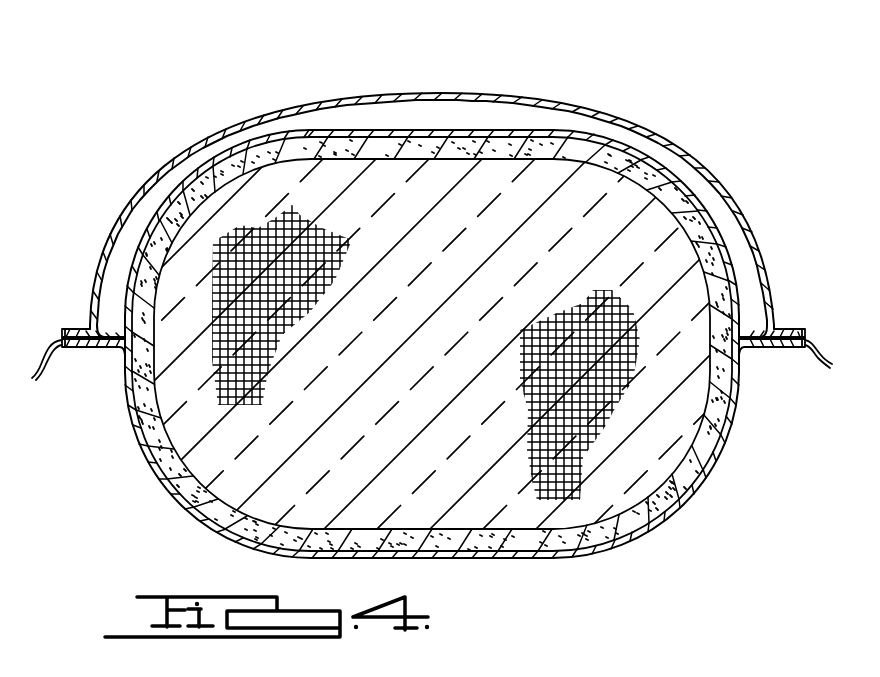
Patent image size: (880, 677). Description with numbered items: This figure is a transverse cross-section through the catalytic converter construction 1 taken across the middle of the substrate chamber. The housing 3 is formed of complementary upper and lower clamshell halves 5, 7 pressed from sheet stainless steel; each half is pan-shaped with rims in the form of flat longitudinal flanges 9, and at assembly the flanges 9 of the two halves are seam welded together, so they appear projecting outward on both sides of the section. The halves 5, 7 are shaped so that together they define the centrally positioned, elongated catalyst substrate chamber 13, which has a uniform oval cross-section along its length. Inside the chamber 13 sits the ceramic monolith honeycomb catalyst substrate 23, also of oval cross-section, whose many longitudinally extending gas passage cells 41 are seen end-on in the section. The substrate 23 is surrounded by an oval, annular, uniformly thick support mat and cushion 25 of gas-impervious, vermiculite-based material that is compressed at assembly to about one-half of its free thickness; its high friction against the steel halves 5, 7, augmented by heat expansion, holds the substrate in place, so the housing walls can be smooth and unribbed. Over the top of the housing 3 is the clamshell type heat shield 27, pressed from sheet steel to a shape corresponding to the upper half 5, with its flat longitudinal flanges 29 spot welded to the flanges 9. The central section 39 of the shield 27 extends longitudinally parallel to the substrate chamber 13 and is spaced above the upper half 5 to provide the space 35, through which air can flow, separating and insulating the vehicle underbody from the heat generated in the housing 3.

The catalytic converter construction 1 is at (765, 185).
The housing 3 is at (730, 437).
The upper clamshell half 5 is at (718, 242).
The lower clamshell half 7 is at (687, 487).
The longitudinal flanges 9 is at (434, 371).
The catalyst substrate chamber 13 is at (648, 505).
The catalyst substrate 23 is at (648, 227).
The support mat and cushion 25 is at (620, 160).
The heat shield 27 is at (560, 94).
The longitudinal flanges of heat shield 29 is at (70, 327).
The space 35 is at (383, 117).
The central section 39 is at (476, 95).
The gas passage cells 41 is at (263, 237).